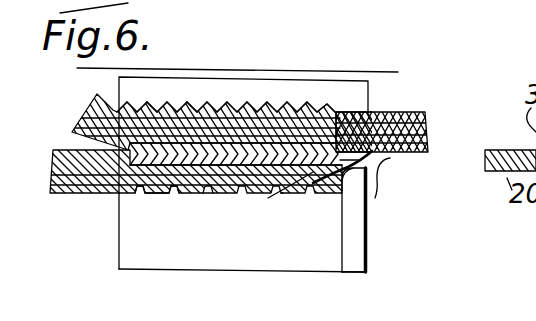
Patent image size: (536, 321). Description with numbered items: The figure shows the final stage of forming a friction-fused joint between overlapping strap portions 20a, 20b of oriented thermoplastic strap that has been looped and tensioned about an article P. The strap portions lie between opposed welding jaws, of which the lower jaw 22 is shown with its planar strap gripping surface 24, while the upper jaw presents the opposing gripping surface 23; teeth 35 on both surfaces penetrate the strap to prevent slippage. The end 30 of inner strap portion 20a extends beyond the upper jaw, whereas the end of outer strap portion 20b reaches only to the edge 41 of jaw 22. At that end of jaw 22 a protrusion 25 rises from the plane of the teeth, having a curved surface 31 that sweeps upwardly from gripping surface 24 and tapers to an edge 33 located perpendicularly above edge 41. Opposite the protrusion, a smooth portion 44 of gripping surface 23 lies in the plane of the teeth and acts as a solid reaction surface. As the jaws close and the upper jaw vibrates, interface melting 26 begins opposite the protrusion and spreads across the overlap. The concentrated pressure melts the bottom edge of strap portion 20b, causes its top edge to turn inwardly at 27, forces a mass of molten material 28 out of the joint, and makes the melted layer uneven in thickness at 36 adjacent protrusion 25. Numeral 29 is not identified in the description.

The end of strap portion 20a 30 is at (90, 104).
The overlapping strap portion 20a is at (426, 128).
The outer overlapping strap portion 20b is at (66, 194).
The welding jaw 22 is at (202, 260).
The edge of jaw 22 41 is at (366, 247).
The strap gripping surface 23 is at (232, 107).
The teeth 35 is at (156, 102).
The interface melting 26 is at (332, 138).
The strap gripping surface 24 is at (170, 196).
The lower die body 29 is at (213, 190).
The inwardly turned top edge 27 is at (296, 200).
The curved surface 31 is at (330, 190).
The edge of protrusion 33 is at (368, 192).
The mass of molten material 28 is at (380, 186).
The uneven thickness of interface melting 36 is at (390, 158).
The gripping surface portion 44 is at (374, 111).
The protrusion 25 is at (355, 266).
The article P is at (323, 68).